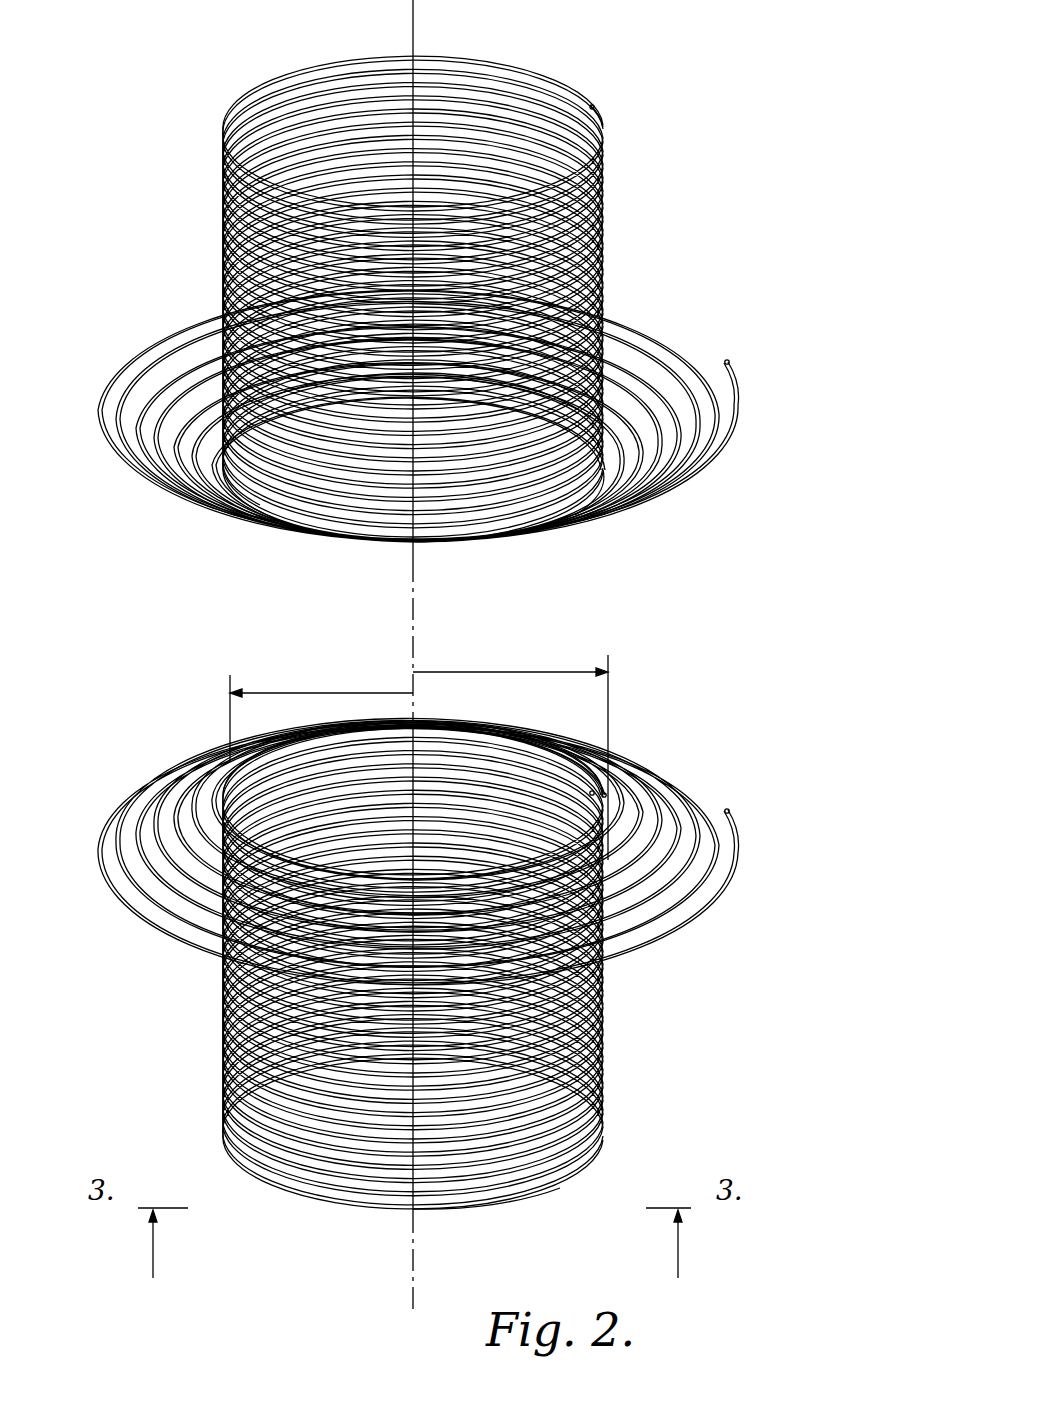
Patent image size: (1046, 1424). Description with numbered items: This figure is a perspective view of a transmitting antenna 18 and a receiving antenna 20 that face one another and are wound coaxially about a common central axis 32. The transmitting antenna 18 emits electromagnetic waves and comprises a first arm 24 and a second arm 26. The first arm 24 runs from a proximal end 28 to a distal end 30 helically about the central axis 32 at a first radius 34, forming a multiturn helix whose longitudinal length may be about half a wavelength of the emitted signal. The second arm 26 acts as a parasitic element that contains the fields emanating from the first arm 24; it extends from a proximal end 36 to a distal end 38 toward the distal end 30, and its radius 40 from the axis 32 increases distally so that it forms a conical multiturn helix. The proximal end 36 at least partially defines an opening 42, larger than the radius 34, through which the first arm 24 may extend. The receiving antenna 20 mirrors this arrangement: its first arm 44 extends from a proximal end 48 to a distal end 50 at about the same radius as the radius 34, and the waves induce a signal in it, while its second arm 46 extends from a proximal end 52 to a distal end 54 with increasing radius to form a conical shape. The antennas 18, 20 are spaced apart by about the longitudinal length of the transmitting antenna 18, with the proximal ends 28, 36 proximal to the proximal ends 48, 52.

The transmitting antenna 18 is at (445, 922).
The receiving antenna 20 is at (469, 275).
The first arm 24 is at (612, 1060).
The second arm 26 is at (155, 762).
The proximal end 28 is at (592, 790).
The distal end 30 is at (523, 1192).
The central axis 32 is at (413, 574).
The first radius 34 is at (315, 692).
The proximal end 36 is at (603, 795).
The distal end 38 is at (735, 822).
The radius 40 is at (525, 668).
The opening 42 is at (387, 722).
The first arm 44 is at (605, 167).
The second arm 46 is at (738, 420).
The proximal end 48 is at (240, 475).
The distal end 50 is at (553, 83).
The proximal end 52 is at (612, 460).
The distal end 54 is at (713, 338).